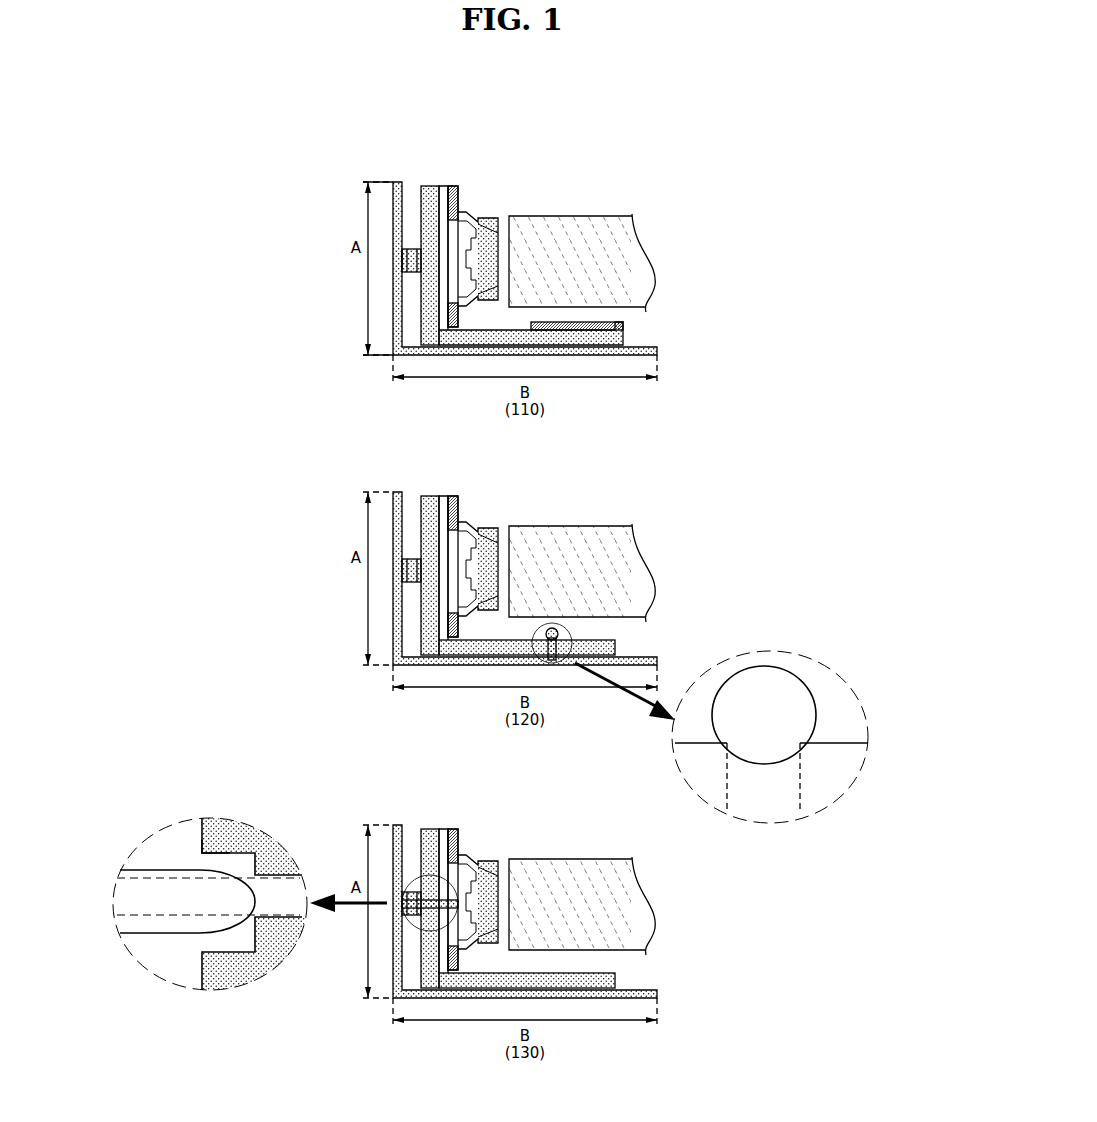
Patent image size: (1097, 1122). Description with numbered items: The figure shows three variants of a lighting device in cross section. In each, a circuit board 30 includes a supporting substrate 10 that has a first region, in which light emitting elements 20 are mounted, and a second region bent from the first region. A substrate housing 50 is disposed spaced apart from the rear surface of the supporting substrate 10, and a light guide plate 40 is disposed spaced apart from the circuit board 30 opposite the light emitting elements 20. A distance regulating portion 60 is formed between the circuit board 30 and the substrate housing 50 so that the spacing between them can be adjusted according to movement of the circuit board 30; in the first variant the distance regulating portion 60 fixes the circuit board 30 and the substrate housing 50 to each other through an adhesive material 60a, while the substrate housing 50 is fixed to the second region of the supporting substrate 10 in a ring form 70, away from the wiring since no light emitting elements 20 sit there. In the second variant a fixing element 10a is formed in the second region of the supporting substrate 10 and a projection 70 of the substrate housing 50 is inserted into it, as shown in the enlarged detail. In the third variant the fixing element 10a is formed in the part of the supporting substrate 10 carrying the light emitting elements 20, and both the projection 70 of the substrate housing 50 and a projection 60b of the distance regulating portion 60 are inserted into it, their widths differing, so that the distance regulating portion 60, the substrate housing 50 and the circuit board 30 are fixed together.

The supporting substrate 10 is at (428, 192).
The fixing element 10a is at (763, 756).
The light emitting elements 20 is at (489, 222).
The circuit board 30 is at (517, 166).
The light guide plate 40 is at (581, 216).
The substrate housing 50 is at (400, 186).
The distance regulating portion 60 is at (409, 249).
The adhesive material 60a is at (402, 254).
The projection of the distance regulating portion 60b is at (233, 883).
The projection of the substrate housing 70 is at (626, 326).